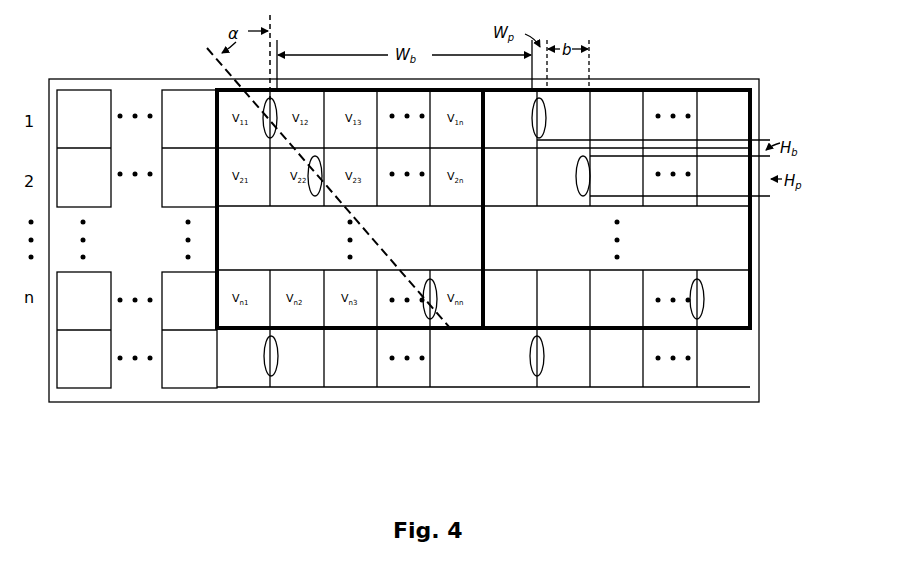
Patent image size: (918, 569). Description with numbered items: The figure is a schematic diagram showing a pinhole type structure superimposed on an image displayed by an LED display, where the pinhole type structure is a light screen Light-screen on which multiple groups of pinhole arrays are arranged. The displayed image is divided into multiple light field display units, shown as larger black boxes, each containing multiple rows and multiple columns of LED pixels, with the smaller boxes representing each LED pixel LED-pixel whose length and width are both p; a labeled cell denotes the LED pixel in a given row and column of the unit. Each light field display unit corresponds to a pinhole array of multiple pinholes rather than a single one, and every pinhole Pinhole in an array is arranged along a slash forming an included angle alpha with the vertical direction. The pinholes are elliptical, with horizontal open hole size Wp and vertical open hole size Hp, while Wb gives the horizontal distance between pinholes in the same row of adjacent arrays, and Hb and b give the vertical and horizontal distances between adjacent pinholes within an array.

The LED pixel LED-pixel is at (78, 92).
The pinhole Pinhole is at (548, 369).
The light screen Light-screen is at (766, 339).